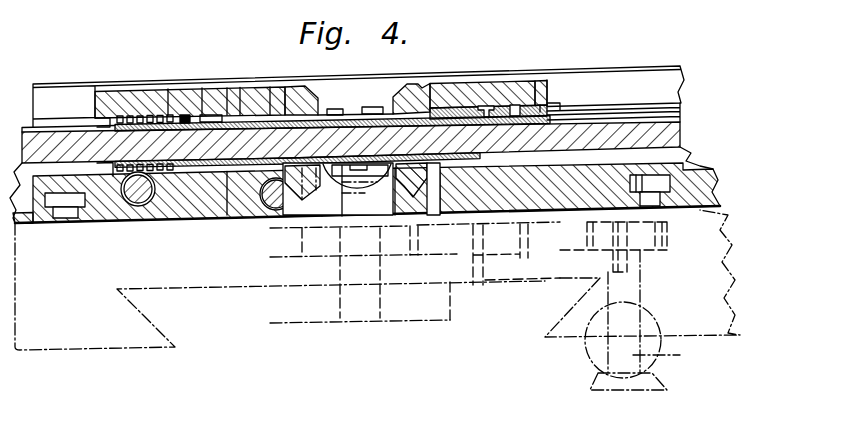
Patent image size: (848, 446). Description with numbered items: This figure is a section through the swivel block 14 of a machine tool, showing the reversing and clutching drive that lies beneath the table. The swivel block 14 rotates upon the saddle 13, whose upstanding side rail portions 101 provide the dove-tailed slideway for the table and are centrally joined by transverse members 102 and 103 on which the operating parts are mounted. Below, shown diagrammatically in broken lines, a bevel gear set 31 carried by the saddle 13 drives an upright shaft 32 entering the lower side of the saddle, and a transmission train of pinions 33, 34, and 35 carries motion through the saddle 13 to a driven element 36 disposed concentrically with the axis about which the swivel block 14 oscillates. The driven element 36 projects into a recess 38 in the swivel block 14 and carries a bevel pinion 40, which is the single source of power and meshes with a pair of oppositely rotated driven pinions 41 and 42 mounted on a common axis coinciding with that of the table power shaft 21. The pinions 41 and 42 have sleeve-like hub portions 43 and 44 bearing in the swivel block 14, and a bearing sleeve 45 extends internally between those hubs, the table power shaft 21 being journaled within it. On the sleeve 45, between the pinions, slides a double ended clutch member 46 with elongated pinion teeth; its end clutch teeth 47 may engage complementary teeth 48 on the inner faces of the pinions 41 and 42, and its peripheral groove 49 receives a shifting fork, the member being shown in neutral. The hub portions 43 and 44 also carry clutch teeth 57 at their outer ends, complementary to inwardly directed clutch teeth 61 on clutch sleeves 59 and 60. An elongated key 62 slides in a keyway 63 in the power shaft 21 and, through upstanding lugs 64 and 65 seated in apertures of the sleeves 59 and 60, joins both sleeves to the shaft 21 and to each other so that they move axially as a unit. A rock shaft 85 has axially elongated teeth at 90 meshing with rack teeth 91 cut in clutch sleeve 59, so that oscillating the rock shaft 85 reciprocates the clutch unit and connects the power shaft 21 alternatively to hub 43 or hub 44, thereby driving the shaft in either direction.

The saddle 13 is at (556, 290).
The swivel block 14 is at (212, 215).
The table power shaft 21 is at (686, 131).
The bevel gear set 31 is at (650, 380).
The upright shaft 32 is at (636, 355).
The pinion 33 is at (662, 244).
The pinion 34 is at (463, 248).
The pinion 35 is at (390, 258).
The driven element 36 is at (300, 222).
The recess 38 is at (440, 192).
The bevel pinion 40 is at (432, 191).
The driven pinion 41 is at (310, 97).
The driven pinion 42 is at (400, 95).
The sleeve-like hub portion 43 is at (272, 115).
The sleeve-like hub portion 44 is at (458, 108).
The bearing sleeve 45 is at (472, 118).
The double ended clutch member 46 is at (333, 114).
The clutch teeth 47 is at (338, 189).
The clutch teeth 48 is at (378, 216).
The peripheral groove 49 is at (356, 114).
The clutch teeth 57 is at (228, 115).
The clutch sleeve 59 is at (205, 115).
The clutch sleeve 60 is at (543, 103).
The clutch teeth 61 is at (494, 114).
The elongated key 62 is at (351, 142).
The keyway 63 is at (662, 113).
The upstanding lug 64 is at (205, 96).
The upstanding lug 65 is at (541, 89).
The rock shaft 85 is at (125, 196).
The axially elongated teeth 90 is at (136, 205).
The rack teeth 91 is at (130, 114).
The upstanding side rail portion 101 is at (620, 78).
The transverse member 102 is at (240, 110).
The transverse member 103 is at (446, 86).